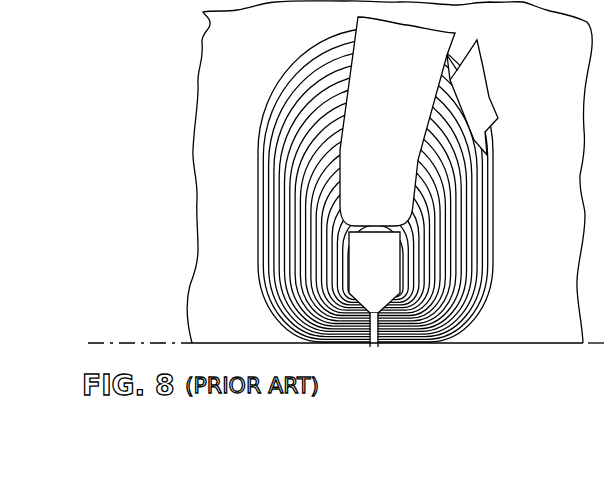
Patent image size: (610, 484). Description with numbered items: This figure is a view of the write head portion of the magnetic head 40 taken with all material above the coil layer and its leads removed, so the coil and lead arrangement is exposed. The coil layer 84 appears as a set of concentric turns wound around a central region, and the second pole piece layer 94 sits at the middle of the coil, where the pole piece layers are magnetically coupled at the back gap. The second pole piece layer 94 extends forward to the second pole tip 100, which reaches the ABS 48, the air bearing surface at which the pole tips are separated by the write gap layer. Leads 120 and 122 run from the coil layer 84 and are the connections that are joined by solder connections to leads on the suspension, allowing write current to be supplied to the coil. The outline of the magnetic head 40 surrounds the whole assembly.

The magnetic head 40 is at (506, 170).
The ABS 48 is at (137, 343).
The coil layer 84 is at (469, 252).
The second pole piece layer 94 is at (383, 277).
The second pole tip 100 is at (375, 347).
The lead 120 is at (400, 118).
The lead 122 is at (485, 82).